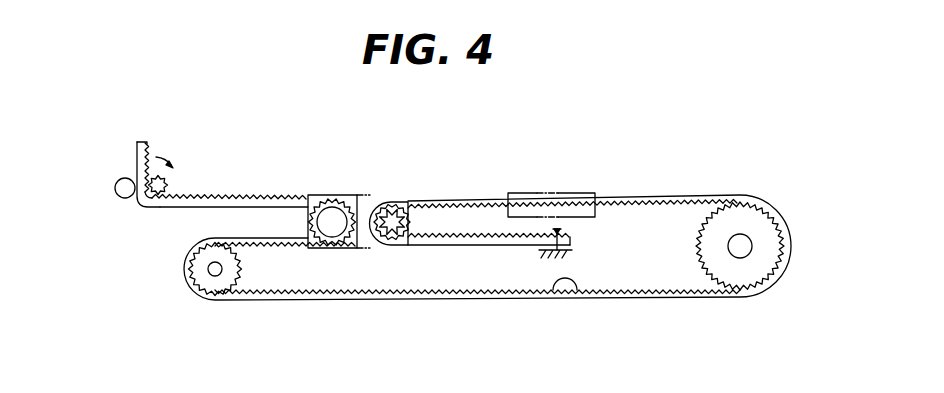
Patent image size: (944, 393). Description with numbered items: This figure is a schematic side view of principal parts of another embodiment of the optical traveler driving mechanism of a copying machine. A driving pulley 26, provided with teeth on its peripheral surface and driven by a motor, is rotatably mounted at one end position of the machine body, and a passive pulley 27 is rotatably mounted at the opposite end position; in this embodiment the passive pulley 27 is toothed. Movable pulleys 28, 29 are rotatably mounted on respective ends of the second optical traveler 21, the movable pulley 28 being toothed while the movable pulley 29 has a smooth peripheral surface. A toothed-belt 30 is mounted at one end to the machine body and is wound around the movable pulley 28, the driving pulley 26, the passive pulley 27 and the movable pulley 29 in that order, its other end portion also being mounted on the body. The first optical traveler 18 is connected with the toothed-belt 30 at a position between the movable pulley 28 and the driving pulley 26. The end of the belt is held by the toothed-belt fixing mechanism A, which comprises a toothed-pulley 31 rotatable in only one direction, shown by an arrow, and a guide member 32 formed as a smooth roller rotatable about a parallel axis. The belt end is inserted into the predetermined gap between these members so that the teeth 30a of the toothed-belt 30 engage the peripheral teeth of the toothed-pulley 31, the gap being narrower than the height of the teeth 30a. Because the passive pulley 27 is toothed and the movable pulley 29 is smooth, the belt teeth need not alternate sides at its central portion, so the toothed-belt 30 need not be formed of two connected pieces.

The first optical traveler 18 is at (578, 192).
The second optical traveler 21 is at (380, 195).
The driving pulley 26 is at (752, 272).
The passive pulley 27 is at (220, 285).
The movable pulley 28 is at (405, 203).
The movable pulley 29 is at (324, 220).
The toothed-belt 30 is at (468, 298).
The teeth of toothed-belt 30a is at (578, 292).
The toothed-pulley 31 is at (168, 190).
The guide member 32 is at (115, 187).
The toothed-belt fixing mechanism A is at (112, 148).